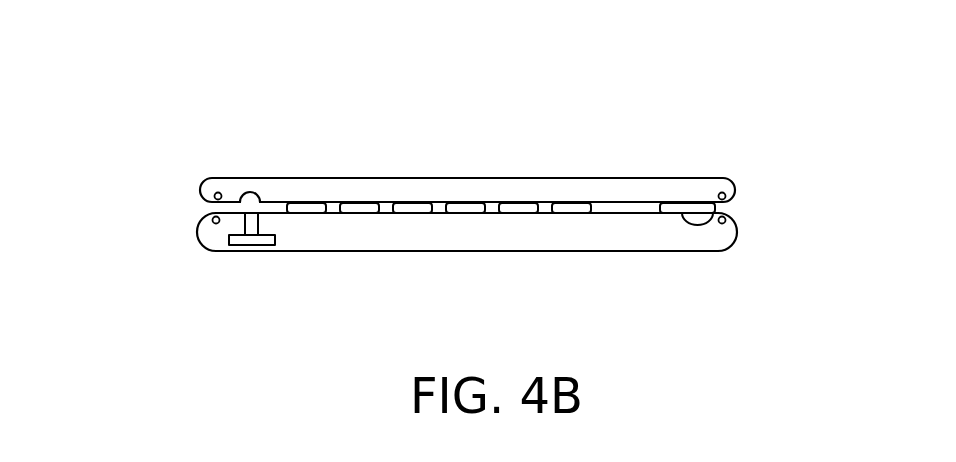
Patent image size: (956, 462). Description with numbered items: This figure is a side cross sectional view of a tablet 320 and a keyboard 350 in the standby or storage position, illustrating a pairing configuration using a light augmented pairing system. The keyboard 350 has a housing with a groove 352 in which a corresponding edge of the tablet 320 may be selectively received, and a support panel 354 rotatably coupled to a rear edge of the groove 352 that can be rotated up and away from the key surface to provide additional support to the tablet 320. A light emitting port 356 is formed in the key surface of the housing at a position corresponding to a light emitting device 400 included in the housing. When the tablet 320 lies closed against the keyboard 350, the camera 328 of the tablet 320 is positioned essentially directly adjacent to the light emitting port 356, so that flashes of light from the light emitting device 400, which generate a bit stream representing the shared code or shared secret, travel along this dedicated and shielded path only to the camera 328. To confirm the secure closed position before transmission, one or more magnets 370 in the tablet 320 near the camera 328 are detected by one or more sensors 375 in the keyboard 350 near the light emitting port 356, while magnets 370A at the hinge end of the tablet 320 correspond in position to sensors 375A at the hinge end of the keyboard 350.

The tablet 320 is at (753, 174).
The camera 328 is at (247, 191).
The keyboard 350 is at (155, 206).
The groove 352 is at (700, 224).
The support panel 354 is at (715, 210).
The light emitting port 356 is at (252, 220).
The magnet 370 is at (217, 192).
The magnet 370A is at (722, 192).
The sensor 375 is at (215, 223).
The sensor 375A is at (722, 224).
The light emitting device 400 is at (258, 250).